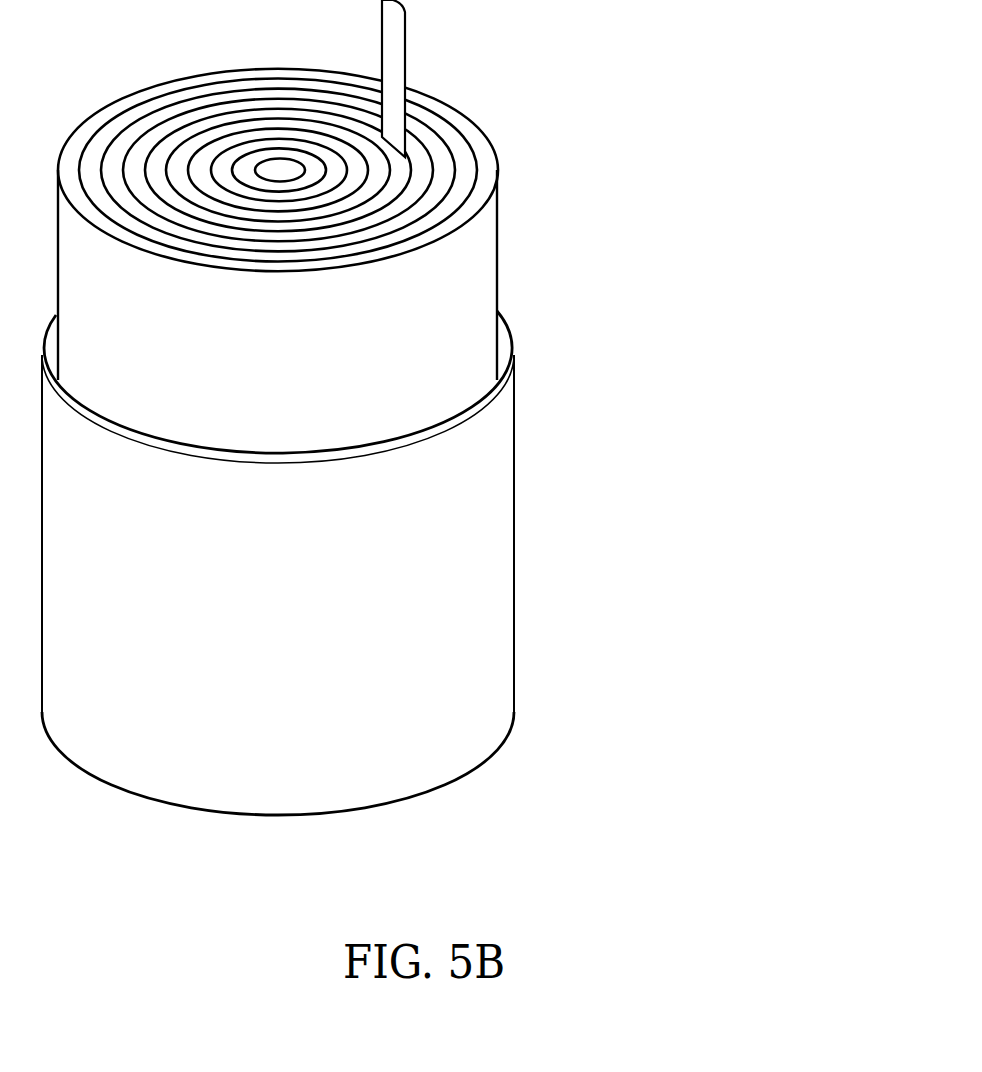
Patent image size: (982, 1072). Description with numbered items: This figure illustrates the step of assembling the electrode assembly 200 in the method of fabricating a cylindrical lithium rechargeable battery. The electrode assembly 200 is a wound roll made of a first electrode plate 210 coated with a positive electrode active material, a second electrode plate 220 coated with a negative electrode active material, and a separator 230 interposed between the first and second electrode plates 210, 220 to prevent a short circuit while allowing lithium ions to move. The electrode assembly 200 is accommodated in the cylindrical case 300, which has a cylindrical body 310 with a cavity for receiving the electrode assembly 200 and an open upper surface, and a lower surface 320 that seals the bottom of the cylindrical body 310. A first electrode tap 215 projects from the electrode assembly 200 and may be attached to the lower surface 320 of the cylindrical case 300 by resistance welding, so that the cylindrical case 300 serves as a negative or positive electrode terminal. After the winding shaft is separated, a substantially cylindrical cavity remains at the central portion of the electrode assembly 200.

The electrode assembly 200 is at (443, 190).
The first electrode plate 210 is at (435, 150).
The first electrode tap 215 is at (393, 30).
The second electrode plate 220 is at (458, 163).
The separator 230 is at (473, 203).
The cylindrical case 300 is at (420, 567).
The cylindrical body 310 is at (488, 443).
The lower surface 320 is at (390, 802).